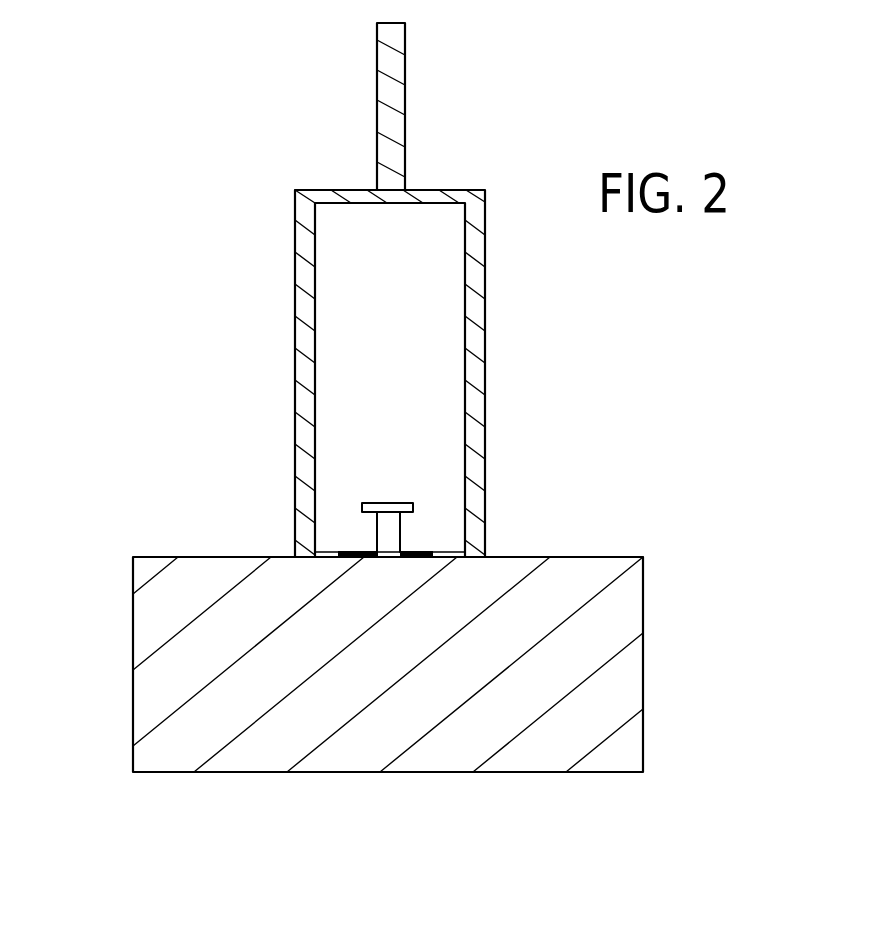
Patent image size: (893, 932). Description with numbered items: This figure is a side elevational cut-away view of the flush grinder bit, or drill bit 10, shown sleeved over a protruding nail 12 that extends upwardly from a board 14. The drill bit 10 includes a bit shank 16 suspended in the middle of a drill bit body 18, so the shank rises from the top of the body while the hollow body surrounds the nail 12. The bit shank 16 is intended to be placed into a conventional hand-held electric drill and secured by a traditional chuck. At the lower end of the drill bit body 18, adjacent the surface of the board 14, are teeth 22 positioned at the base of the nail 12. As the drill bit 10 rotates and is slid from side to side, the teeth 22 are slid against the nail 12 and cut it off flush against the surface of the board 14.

The flush grinder bit 10 is at (182, 241).
The protruding nail 12 is at (380, 535).
The board 14 is at (613, 622).
The bit shank 16 is at (405, 92).
The drill bit body 18 is at (475, 347).
The teeth 22 is at (360, 558).